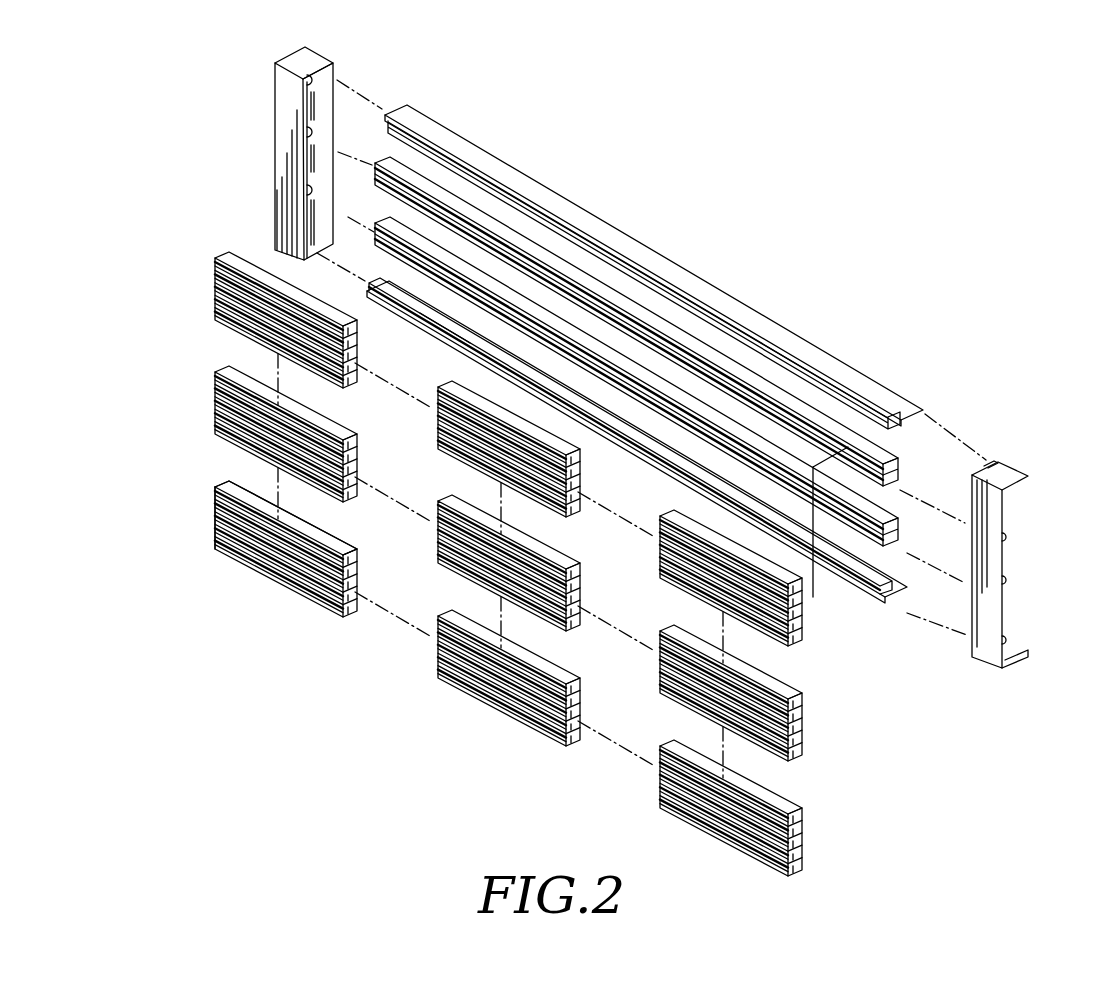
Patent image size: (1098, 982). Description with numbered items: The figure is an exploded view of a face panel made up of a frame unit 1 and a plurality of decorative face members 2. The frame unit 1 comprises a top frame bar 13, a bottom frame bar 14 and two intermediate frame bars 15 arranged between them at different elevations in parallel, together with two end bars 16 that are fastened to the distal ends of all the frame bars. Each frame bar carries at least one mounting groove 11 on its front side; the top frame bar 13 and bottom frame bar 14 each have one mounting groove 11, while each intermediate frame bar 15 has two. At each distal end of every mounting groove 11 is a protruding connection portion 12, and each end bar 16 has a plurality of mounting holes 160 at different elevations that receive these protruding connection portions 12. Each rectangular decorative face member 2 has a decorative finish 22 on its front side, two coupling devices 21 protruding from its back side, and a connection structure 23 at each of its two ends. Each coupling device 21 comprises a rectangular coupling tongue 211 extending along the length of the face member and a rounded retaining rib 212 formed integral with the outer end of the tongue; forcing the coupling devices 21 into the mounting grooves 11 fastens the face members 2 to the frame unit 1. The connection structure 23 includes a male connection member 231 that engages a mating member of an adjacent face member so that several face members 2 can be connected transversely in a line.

The frame unit 1 is at (673, 395).
The mounting groove 11 is at (645, 452).
The protruding connection portion 12 is at (377, 158).
The top frame bar 13 is at (743, 310).
The bottom frame bar 14 is at (448, 331).
The intermediate frame bar 15 is at (772, 397).
The end bar 16 is at (673, 340).
The mounting hole 160 is at (310, 194).
The decorative face member 2 is at (518, 564).
The coupling device 21 is at (472, 663).
The rectangular coupling tongue 211 is at (242, 490).
The rounded retaining rib 212 is at (222, 484).
The decorative finish 22 is at (457, 703).
The connection structure 23 is at (644, 655).
The male connection member 231 is at (356, 472).